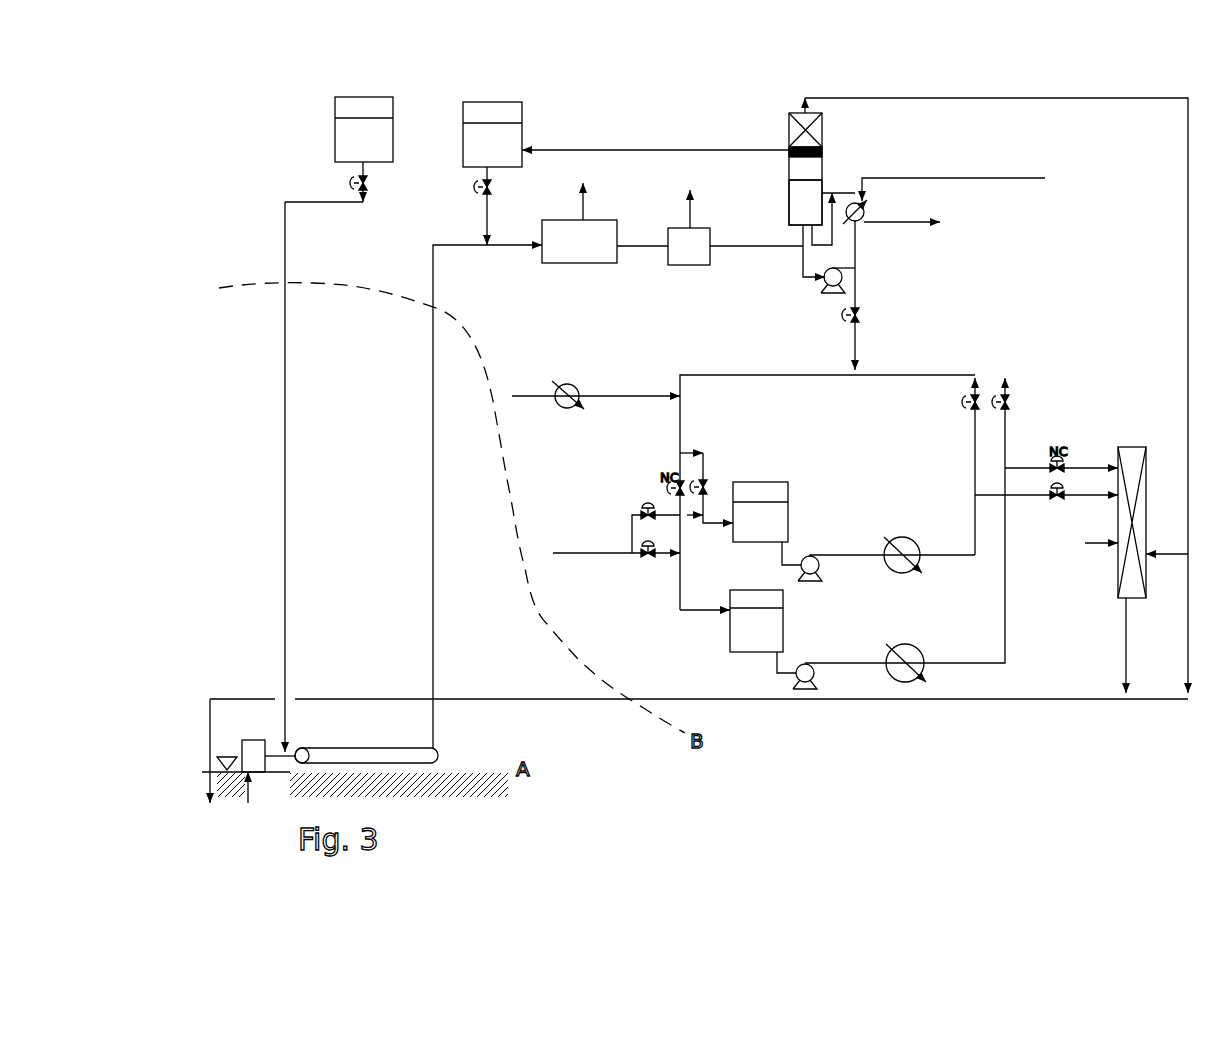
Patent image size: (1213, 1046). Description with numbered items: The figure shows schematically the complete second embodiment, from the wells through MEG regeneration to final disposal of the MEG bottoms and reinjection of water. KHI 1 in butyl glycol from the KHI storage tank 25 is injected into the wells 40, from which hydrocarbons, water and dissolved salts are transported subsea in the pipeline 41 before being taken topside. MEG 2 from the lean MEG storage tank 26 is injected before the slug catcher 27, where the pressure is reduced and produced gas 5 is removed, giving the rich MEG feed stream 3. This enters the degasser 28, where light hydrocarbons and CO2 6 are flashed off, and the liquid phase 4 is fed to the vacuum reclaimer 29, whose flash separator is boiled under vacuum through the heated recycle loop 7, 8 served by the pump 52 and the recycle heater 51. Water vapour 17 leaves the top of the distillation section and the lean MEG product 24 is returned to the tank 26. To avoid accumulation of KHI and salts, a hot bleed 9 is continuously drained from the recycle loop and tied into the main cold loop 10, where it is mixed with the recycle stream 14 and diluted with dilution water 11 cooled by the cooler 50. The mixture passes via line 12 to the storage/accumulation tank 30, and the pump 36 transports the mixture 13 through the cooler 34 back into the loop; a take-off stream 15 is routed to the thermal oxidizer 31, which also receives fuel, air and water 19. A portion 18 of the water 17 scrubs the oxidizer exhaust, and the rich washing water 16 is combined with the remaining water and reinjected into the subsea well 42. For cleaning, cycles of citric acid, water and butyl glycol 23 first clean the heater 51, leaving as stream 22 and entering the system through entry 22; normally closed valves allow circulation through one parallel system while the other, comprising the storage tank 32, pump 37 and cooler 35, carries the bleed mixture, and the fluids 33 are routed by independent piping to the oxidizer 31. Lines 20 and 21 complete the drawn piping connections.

The KHI stream 1 is at (273, 477).
The MEG stream 2 is at (473, 219).
The rich MEG feed stream 3 is at (642, 229).
The liquid phase 4 is at (756, 229).
The produced gas stream 5 is at (591, 201).
The flashed light hydrocarbons and CO2 stream 6 is at (699, 209).
The bottom stream of recycle loop 7 is at (814, 251).
The return stream of recycle loop 8 is at (817, 161).
The bleed stream 9 is at (867, 295).
The main cold loop 10 is at (827, 476).
The dilution water 11 is at (596, 380).
The line to tank 12 is at (706, 469).
The mixture stream 13 is at (892, 545).
The recycle stream 14 is at (943, 448).
The take-off stream 15 is at (1046, 485).
The rich washing water 16 is at (1102, 645).
The water vapour / produced water 17 is at (996, 380).
The scrubbing water portion 18 is at (1167, 541).
The fuel, air and water stream 19 is at (1098, 527).
The bottom line to well 20 is at (699, 738).
The line from well to unit 27 21 is at (473, 496).
The cleaning liquid stream / entry 22 is at (762, 385).
The cleaning liquid 23 is at (953, 175).
The lean MEG product 24 is at (655, 136).
The KHI storage tank 25 is at (339, 149).
The lean MEG storage tank 26 is at (492, 148).
The slug catcher 27 is at (579, 241).
The degasser 28 is at (689, 246).
The vacuum reclaimer 29 is at (805, 202).
The storage/accumulation tank 30 is at (760, 512).
The thermal oxidizer 31 is at (1132, 522).
The storage tank 32 is at (731, 621).
The fluid line from storage tank 33 is at (917, 520).
The cooler 34 is at (903, 569).
The cooler 35 is at (922, 670).
The pump 36 is at (803, 573).
The pump 37 is at (812, 677).
The wells 40 is at (264, 787).
The pipeline 41 is at (366, 745).
The subsea well 42 is at (262, 742).
The cooler 50 is at (568, 408).
The recycle heater 51 is at (870, 212).
The pump 52 is at (833, 317).